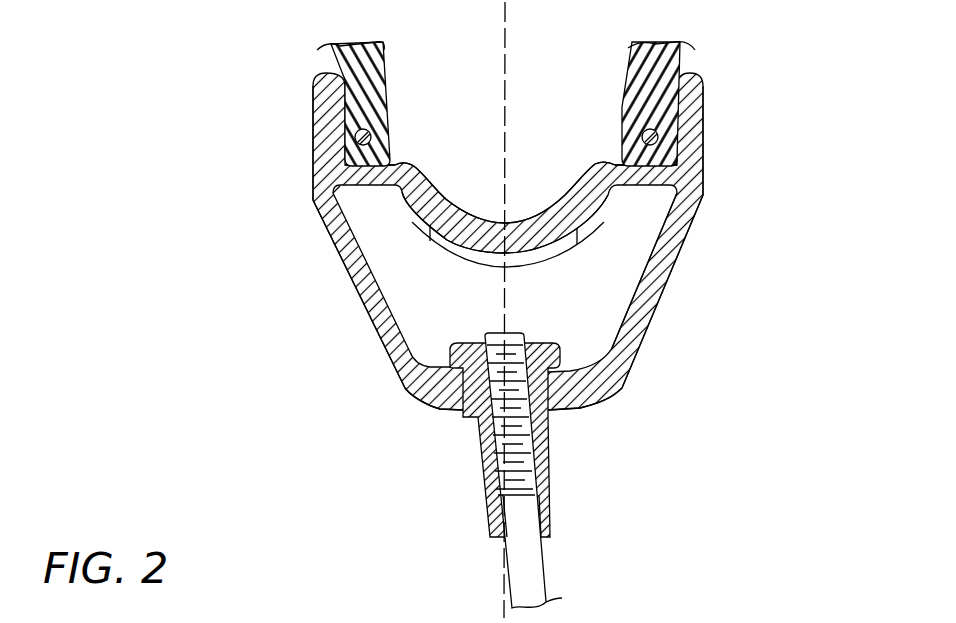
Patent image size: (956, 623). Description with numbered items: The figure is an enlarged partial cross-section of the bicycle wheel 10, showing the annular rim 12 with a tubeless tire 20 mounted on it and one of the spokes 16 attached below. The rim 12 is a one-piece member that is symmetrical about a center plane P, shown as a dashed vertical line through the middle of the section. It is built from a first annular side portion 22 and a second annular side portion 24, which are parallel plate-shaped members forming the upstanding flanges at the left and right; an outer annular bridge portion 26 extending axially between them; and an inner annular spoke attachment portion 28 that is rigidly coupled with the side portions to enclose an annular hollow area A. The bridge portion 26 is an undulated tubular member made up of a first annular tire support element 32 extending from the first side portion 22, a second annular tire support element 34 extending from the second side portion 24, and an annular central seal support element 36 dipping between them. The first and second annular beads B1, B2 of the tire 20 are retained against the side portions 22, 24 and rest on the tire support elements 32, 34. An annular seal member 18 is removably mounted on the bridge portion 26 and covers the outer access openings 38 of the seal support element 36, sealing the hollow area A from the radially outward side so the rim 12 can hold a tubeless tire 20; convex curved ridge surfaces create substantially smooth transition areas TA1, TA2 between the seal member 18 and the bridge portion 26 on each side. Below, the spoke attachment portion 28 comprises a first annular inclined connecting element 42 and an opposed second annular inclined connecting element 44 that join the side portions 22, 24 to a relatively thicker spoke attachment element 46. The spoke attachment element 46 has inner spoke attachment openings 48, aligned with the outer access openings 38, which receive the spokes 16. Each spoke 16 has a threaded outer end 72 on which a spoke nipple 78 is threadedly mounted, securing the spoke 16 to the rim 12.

The bicycle wheel 10 is at (528, 310).
The annular rim 12 is at (711, 146).
The spokes 16 is at (579, 473).
The annular seal member 18 is at (462, 199).
The tubeless tire 20 is at (563, 89).
The first annular side portion 22 is at (709, 176).
The second annular side portion 24 is at (312, 163).
The outer annular bridge portion 26 is at (603, 233).
The inner annular spoke attachment portion 28 is at (637, 344).
The first annular tire support element 32 is at (657, 180).
The second annular tire support element 34 is at (366, 180).
The annular central seal support element 36 is at (433, 232).
The outer access openings 38 is at (462, 248).
The first annular inclined connecting element 42 is at (650, 307).
The second annular inclined connecting element 44 is at (363, 313).
The spoke attachment element 46 is at (583, 398).
The inner spoke attachment openings 48 is at (477, 430).
The threaded outer end 72 is at (525, 540).
The spoke nipple 78 is at (548, 474).
The annular hollow area A is at (630, 288).
The center plane P is at (507, 87).
The first annular bead B1 is at (622, 110).
The second annular bead B2 is at (392, 108).
The first transition area TA1 is at (617, 148).
The second transition area TA2 is at (445, 178).